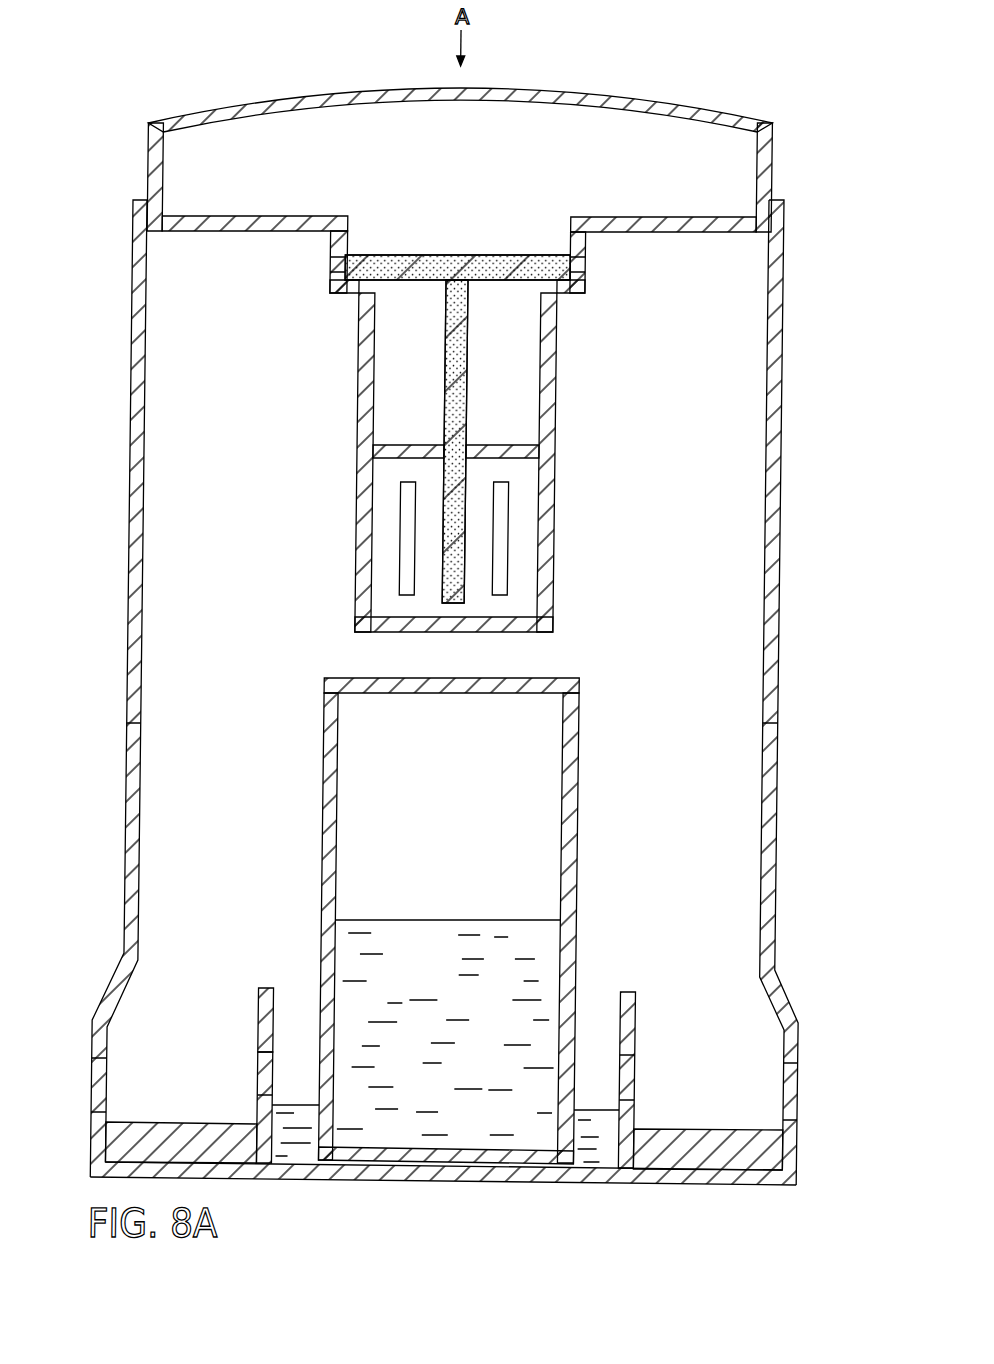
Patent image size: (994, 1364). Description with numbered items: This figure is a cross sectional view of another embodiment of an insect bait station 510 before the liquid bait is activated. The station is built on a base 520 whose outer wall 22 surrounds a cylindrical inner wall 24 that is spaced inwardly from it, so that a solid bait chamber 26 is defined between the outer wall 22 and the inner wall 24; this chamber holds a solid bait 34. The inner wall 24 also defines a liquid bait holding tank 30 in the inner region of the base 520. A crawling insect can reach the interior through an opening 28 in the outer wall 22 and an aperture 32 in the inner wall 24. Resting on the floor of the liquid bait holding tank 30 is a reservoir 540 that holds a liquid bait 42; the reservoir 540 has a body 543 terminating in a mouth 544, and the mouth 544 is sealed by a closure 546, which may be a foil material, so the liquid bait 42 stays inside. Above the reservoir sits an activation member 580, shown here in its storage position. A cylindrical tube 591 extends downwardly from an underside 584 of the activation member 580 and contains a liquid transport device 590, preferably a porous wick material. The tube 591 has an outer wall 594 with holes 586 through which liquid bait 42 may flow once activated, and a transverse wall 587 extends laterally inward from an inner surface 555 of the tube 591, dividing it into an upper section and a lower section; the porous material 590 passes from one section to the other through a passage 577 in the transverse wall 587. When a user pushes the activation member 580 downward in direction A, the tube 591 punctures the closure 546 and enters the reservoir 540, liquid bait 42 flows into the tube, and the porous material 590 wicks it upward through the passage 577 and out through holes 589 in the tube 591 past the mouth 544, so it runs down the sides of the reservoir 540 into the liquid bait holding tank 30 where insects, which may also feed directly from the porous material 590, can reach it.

The activation member 580 is at (626, 100).
The underside 584 is at (201, 227).
The holes 589 is at (580, 268).
The liquid transport device 590 is at (432, 257).
The passage 577 is at (477, 430).
The transverse wall 587 is at (399, 445).
The outer wall 594 is at (541, 515).
The cylindrical tube 591 is at (570, 545).
The holes 586 is at (405, 570).
The inner surface 555 is at (421, 508).
The insect bait station 510 is at (87, 695).
The base 520 is at (72, 1048).
The opening 28 is at (92, 1097).
The solid bait 34 is at (117, 1147).
The solid bait chamber 26 is at (766, 1038).
The inner wall 24 is at (269, 1027).
The aperture 32 is at (268, 1072).
The outer wall 22 is at (794, 1052).
The liquid bait holding tank 30 is at (298, 987).
The closure 546 is at (547, 680).
The body 543 is at (327, 870).
The mouth 544 is at (553, 705).
The reservoir 540 is at (605, 842).
The liquid bait 42 is at (563, 942).